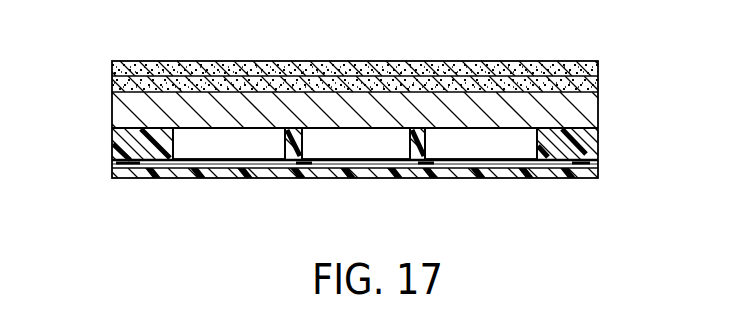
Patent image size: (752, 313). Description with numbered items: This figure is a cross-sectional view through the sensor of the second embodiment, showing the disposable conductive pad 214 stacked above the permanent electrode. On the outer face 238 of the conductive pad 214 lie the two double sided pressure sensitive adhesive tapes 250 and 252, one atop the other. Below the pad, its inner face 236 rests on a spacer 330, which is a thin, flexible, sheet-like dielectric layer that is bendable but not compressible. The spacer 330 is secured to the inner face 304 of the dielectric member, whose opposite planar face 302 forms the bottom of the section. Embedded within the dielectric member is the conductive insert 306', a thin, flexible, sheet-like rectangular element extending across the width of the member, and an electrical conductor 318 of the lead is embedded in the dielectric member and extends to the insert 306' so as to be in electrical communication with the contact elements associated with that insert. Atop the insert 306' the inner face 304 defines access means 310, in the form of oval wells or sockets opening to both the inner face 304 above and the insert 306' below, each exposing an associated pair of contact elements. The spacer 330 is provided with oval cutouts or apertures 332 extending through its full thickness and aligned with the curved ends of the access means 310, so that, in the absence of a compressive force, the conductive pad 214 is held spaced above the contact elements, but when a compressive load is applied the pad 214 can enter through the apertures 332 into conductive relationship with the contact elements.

The conductive pad 214 is at (499, 100).
The double sided pressure sensitive adhesive tape 252 is at (592, 68).
The double sided pressure sensitive adhesive tape 250 is at (588, 86).
The outer face 238 is at (584, 95).
The inner face 236 is at (568, 122).
The oval cutouts or apertures 332 is at (433, 135).
The conductive insert 306' is at (363, 180).
The access means 310 is at (279, 172).
The spacer 330 is at (120, 132).
The inner face 304 is at (116, 152).
The electrical conductor 318 is at (131, 178).
The planar face 302 is at (118, 178).